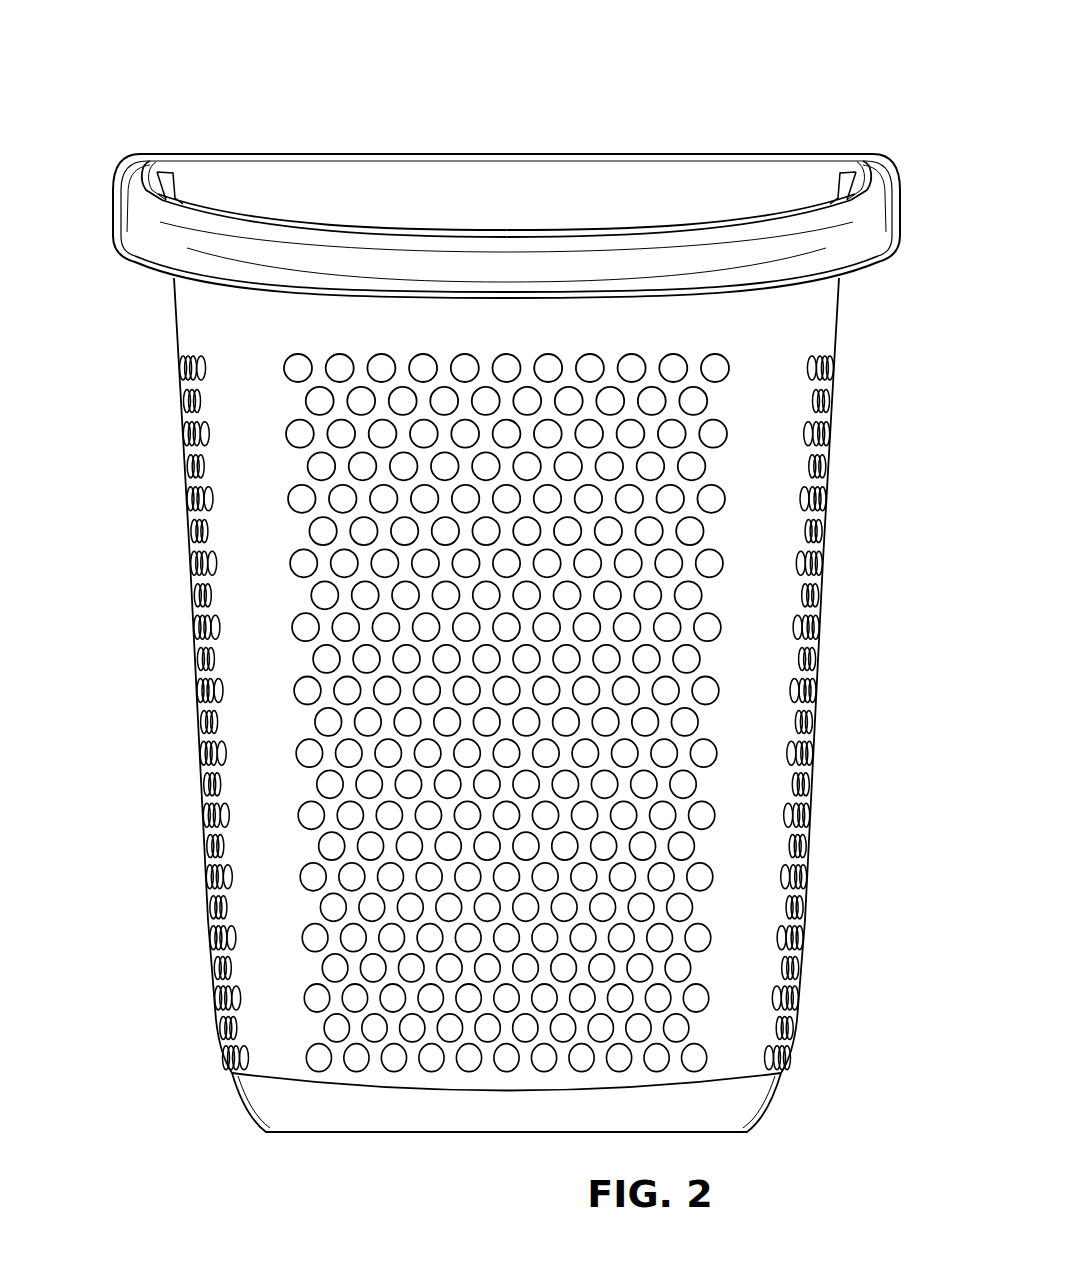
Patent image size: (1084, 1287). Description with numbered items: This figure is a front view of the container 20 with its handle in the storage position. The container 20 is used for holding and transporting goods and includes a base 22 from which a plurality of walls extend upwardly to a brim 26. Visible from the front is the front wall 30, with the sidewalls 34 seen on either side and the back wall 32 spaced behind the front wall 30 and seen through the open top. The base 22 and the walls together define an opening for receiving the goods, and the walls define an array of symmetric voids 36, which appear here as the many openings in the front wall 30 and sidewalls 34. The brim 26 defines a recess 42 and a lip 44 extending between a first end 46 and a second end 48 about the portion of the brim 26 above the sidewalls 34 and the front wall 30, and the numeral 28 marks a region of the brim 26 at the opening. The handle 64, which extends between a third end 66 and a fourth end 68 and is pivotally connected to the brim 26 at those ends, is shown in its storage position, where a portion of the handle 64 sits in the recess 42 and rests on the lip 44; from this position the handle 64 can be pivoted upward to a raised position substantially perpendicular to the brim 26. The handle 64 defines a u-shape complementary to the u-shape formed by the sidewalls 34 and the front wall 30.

The container 20 is at (773, 46).
The base 22 is at (313, 1132).
The brim 26 is at (855, 163).
The inner lip 28 is at (310, 192).
The front wall 30 is at (367, 758).
The back wall 32 is at (628, 195).
The sidewalls 34 is at (190, 517).
The voids 36 is at (205, 612).
The recess 42 is at (140, 163).
The lip 44 is at (887, 257).
The first end 46 is at (123, 187).
The second end 48 is at (873, 163).
The handle 64 is at (183, 247).
The third end 66 is at (130, 190).
The fourth end 68 is at (877, 200).